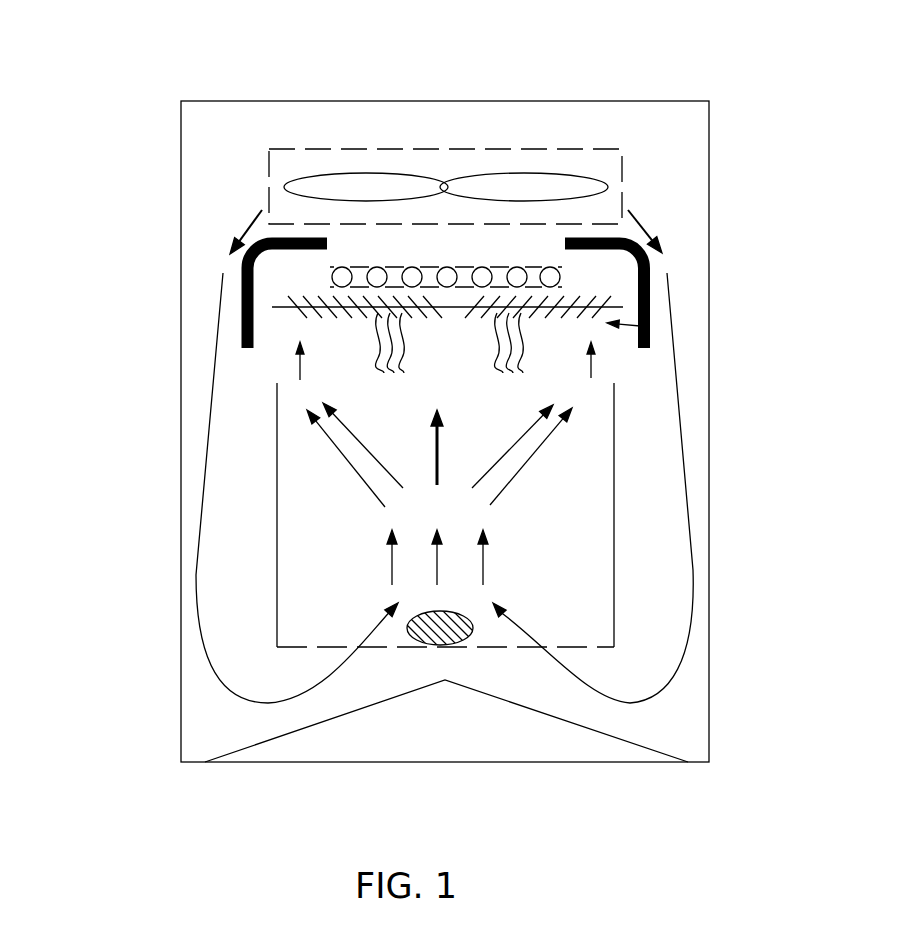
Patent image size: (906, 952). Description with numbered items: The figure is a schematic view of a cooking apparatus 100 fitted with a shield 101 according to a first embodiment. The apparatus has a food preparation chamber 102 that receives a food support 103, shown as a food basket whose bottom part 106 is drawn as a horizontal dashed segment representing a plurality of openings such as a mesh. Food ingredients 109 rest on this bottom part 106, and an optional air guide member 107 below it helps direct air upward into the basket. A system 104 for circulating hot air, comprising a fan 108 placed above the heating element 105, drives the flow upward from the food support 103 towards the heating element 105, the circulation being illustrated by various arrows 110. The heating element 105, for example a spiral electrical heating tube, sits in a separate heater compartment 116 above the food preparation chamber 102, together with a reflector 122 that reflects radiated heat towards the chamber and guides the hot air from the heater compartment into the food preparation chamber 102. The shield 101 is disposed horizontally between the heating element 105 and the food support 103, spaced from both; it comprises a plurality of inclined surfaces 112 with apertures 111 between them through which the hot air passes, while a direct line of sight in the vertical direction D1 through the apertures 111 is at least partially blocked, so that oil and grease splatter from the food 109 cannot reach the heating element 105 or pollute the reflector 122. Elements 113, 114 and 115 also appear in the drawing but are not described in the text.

The cooking apparatus 100 is at (144, 45).
The shield 101 is at (640, 326).
The food preparation chamber 102 is at (652, 410).
The food support 103 is at (615, 477).
The system for circulating a flow of hot air 104 is at (590, 149).
The heating element 105 is at (556, 277).
The bottom part 106 is at (570, 645).
The air guide member 107 is at (633, 740).
The fan 108 is at (408, 179).
The food ingredients 109 is at (412, 640).
The arrows 110 is at (309, 412).
The apertures 111 is at (396, 356).
The inclined surfaces 112 is at (515, 353).
The air flow arrows 113 is at (444, 330).
The heater support 114 is at (453, 295).
The heat sink plate 115 is at (603, 307).
The heater compartment 116 is at (312, 273).
The reflector 122 is at (645, 348).
The vertical direction D1 is at (438, 447).